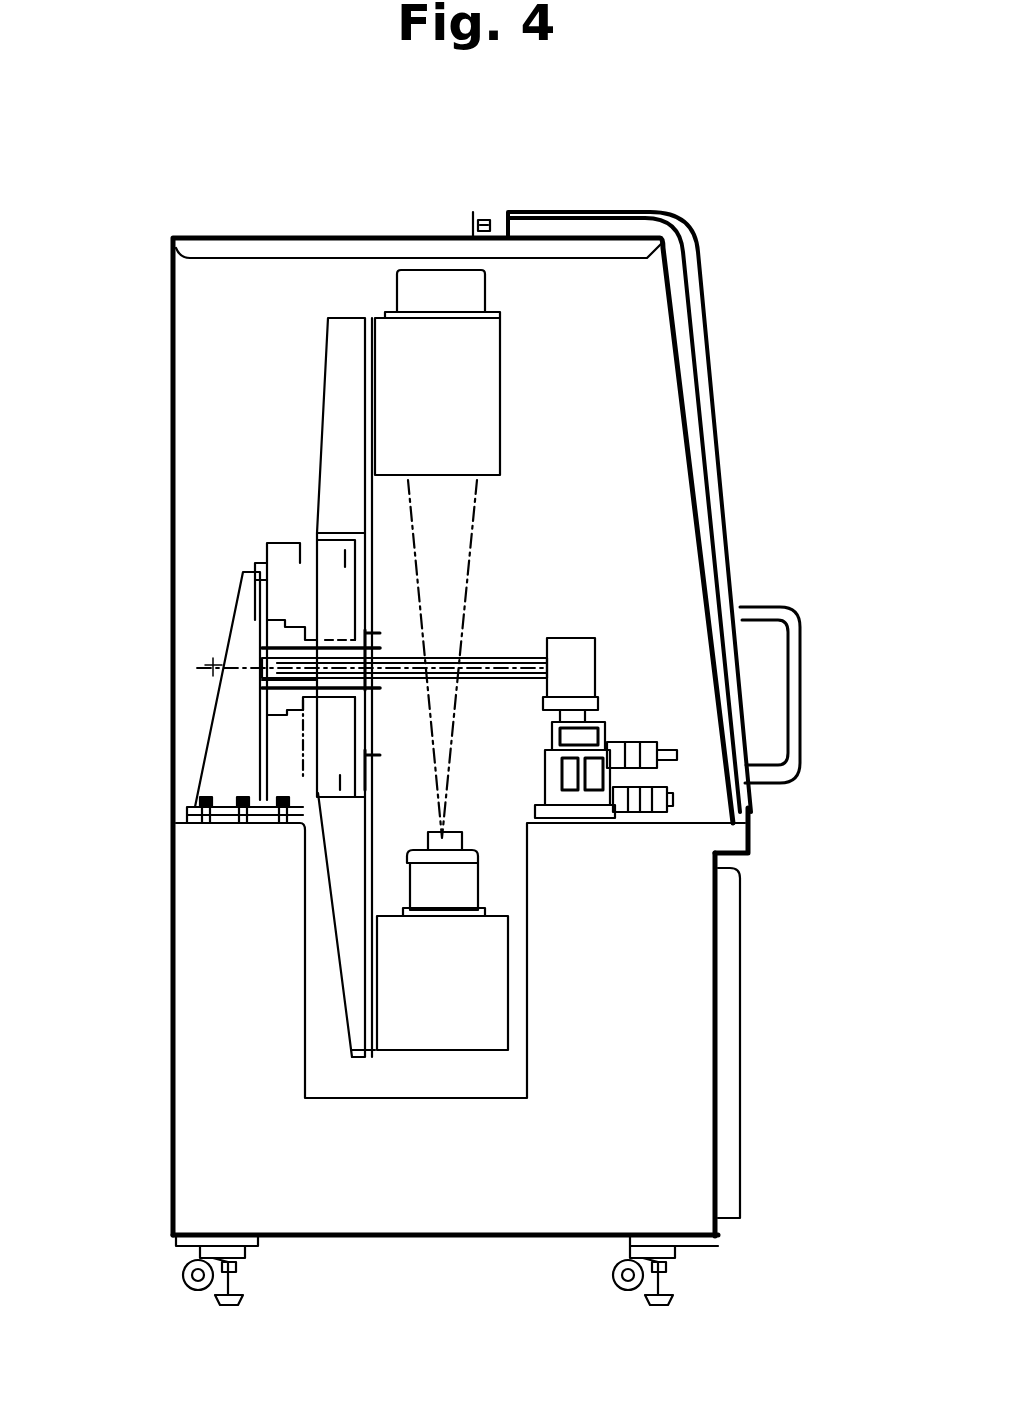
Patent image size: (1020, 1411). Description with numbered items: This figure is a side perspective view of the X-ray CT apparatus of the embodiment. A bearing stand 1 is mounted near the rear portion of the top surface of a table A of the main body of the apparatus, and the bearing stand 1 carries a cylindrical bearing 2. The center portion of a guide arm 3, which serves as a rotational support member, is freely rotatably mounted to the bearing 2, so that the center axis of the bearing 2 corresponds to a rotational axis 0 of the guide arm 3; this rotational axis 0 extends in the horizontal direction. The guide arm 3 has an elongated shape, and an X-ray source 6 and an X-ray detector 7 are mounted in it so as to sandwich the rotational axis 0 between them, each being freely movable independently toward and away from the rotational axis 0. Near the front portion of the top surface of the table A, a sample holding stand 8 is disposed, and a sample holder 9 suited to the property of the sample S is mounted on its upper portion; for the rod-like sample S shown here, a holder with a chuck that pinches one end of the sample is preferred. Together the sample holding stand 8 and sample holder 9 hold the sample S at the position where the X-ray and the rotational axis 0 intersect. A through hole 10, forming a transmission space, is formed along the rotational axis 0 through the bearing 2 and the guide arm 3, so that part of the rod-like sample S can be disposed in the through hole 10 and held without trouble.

The rotational axis 0 is at (213, 667).
The bearing stand 1 is at (203, 760).
The bearing 2 is at (283, 542).
The guide arm 3 is at (323, 402).
The X-ray source 6 is at (483, 983).
The X-ray detector 7 is at (503, 399).
The sample holding stand 8 is at (630, 743).
The sample holder 9 is at (598, 657).
The through hole 10 is at (263, 675).
The sample S is at (440, 660).
The table A is at (683, 818).